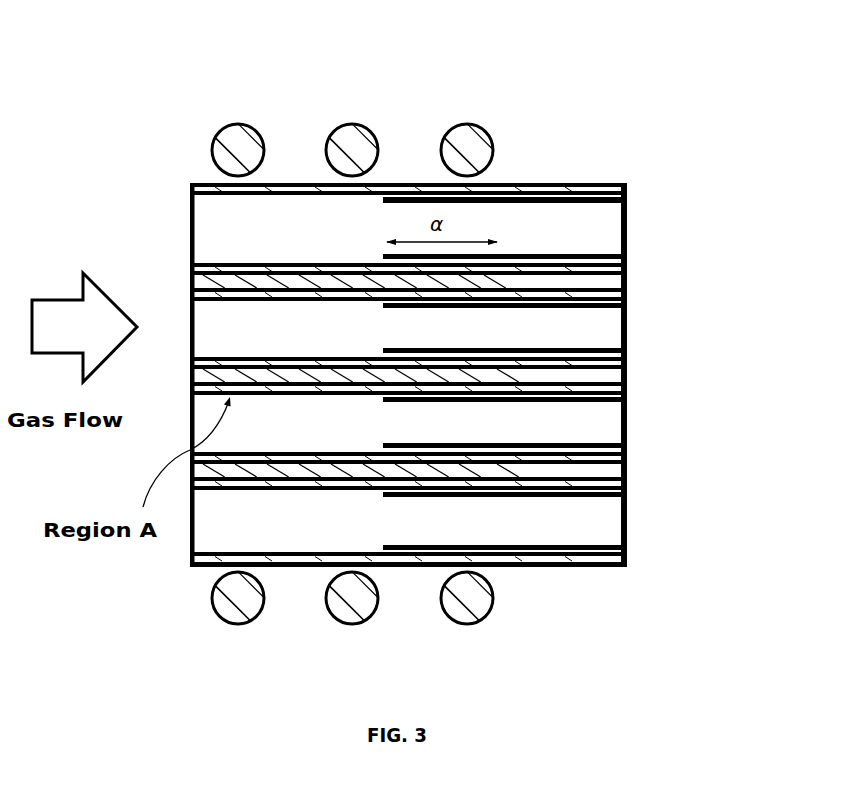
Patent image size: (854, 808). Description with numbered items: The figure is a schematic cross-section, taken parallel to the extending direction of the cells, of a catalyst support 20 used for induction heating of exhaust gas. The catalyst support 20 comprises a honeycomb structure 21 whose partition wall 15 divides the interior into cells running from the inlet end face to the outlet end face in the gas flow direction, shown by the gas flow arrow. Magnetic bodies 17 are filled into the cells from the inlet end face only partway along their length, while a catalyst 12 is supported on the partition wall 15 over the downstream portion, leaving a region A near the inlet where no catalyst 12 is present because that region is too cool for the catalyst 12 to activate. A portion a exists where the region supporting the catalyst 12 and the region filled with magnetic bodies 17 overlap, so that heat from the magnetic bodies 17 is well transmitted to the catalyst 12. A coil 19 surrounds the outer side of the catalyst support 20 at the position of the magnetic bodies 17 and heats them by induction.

The catalyst 12 is at (618, 447).
The partition wall 15 is at (625, 388).
The magnetic body 17 is at (190, 280).
The coil 19 is at (223, 128).
The catalyst support 20 is at (394, 92).
The honeycomb structure 21 is at (634, 229).